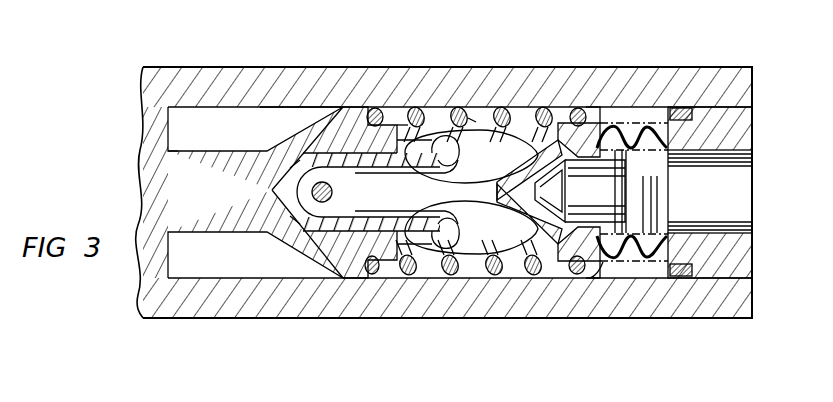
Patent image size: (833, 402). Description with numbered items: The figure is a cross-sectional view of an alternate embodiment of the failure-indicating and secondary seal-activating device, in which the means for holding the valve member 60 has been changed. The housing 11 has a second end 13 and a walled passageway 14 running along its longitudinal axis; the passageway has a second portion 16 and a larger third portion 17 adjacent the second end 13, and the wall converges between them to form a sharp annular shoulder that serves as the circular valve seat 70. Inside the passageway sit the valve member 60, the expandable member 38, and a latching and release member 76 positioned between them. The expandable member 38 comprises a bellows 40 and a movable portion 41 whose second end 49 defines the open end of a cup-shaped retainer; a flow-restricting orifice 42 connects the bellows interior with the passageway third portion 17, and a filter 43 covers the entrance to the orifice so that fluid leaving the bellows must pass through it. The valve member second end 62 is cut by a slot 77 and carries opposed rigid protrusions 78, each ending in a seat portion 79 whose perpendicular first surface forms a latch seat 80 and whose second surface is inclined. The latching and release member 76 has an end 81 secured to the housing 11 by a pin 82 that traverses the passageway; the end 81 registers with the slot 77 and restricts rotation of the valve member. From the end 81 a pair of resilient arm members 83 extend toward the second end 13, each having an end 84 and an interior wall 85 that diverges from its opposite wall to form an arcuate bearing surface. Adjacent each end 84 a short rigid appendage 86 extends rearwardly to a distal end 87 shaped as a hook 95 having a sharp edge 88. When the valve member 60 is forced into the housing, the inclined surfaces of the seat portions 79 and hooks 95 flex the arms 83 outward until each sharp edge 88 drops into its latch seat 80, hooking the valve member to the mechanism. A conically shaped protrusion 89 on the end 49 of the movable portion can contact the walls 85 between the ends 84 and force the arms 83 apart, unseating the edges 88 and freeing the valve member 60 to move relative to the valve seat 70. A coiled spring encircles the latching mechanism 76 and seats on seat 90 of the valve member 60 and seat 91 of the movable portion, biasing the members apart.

The housing 11 is at (308, 64).
The second end 13 is at (752, 78).
The walled passageway 14 is at (258, 114).
The second portion 16 is at (178, 152).
The third portion 17 is at (302, 112).
The expandable member 38 is at (760, 124).
The bellows 40 is at (648, 128).
The movable portion 41 is at (590, 120).
The flow-restricting orifice 42 is at (532, 270).
The filter 43 is at (626, 164).
The second end 49 is at (603, 262).
The valve member 60 is at (176, 200).
The second end 62 is at (402, 108).
The valve seat 70 is at (176, 236).
The latching and release member 76 is at (492, 126).
The slot 77 is at (266, 200).
The protrusions 78 is at (456, 149).
The seat portions 79 is at (444, 158).
The latch seat 80 is at (445, 206).
The end 81 is at (290, 205).
The pin 82 is at (288, 171).
The resilient arm members 83 is at (422, 193).
The end 84 is at (546, 108).
The interior wall 85 is at (383, 193).
The appendage 86 is at (440, 115).
The distal end 87 is at (372, 143).
The sharp edge 88 is at (484, 110).
The conically shaped protrusion 89 is at (515, 216).
The seat 90 is at (373, 108).
The seat 91 is at (578, 108).
The hook 95 is at (376, 278).